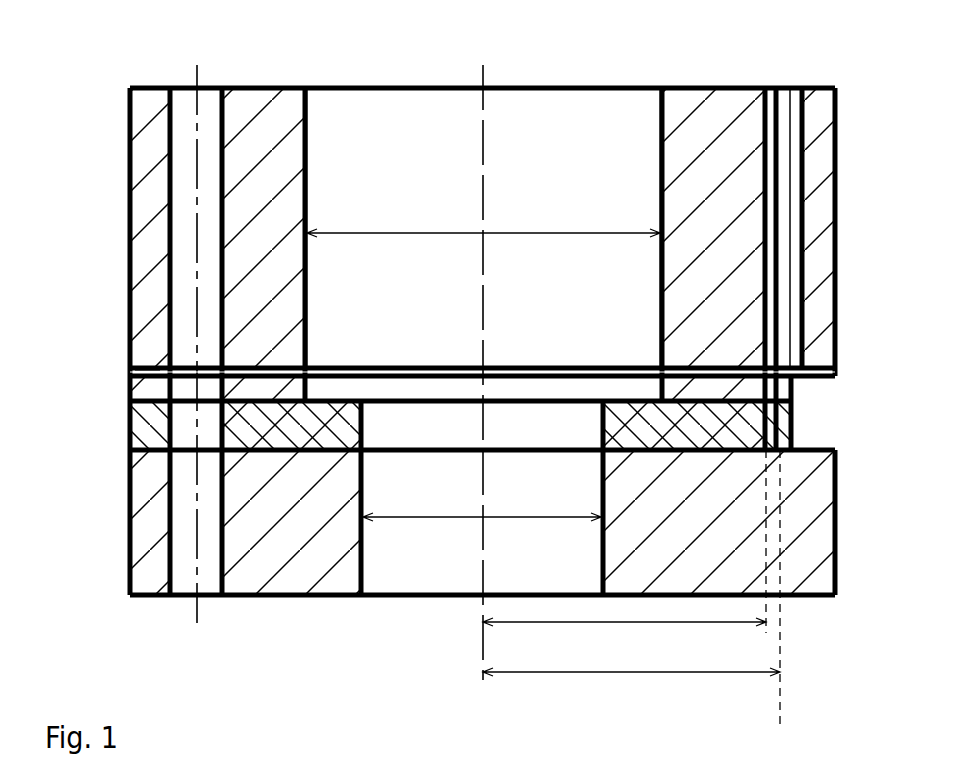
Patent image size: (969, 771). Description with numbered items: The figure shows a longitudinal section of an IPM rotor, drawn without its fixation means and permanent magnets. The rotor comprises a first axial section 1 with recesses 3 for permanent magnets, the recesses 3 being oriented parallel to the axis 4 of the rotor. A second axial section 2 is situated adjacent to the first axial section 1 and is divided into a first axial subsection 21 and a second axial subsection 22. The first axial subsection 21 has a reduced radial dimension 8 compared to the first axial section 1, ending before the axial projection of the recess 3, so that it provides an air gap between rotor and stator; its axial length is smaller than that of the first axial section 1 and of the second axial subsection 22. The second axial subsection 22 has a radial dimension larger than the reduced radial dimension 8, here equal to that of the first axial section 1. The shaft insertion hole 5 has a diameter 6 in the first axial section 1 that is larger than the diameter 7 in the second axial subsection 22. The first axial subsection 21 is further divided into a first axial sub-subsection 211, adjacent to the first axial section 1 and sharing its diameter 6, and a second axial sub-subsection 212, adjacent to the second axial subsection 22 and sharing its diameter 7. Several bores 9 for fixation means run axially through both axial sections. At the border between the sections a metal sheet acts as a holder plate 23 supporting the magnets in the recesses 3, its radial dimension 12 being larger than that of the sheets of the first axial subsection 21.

The first axial section 1 is at (511, 311).
The second axial section 2 is at (481, 485).
The recesses 3 is at (782, 105).
The axis 4 is at (485, 105).
The shaft insertion hole 5 is at (556, 150).
The diameter 6 is at (483, 217).
The diameter 7 is at (482, 503).
The reduced radial dimension 8 is at (624, 554).
The bores 9 is at (202, 117).
The radial dimension 12 is at (631, 588).
The first axial subsection 21 is at (456, 413).
The second axial subsection 22 is at (120, 450).
The holder plate 23 is at (147, 370).
The first axial sub-subsection 211 is at (803, 378).
The second axial sub-subsection 212 is at (394, 408).